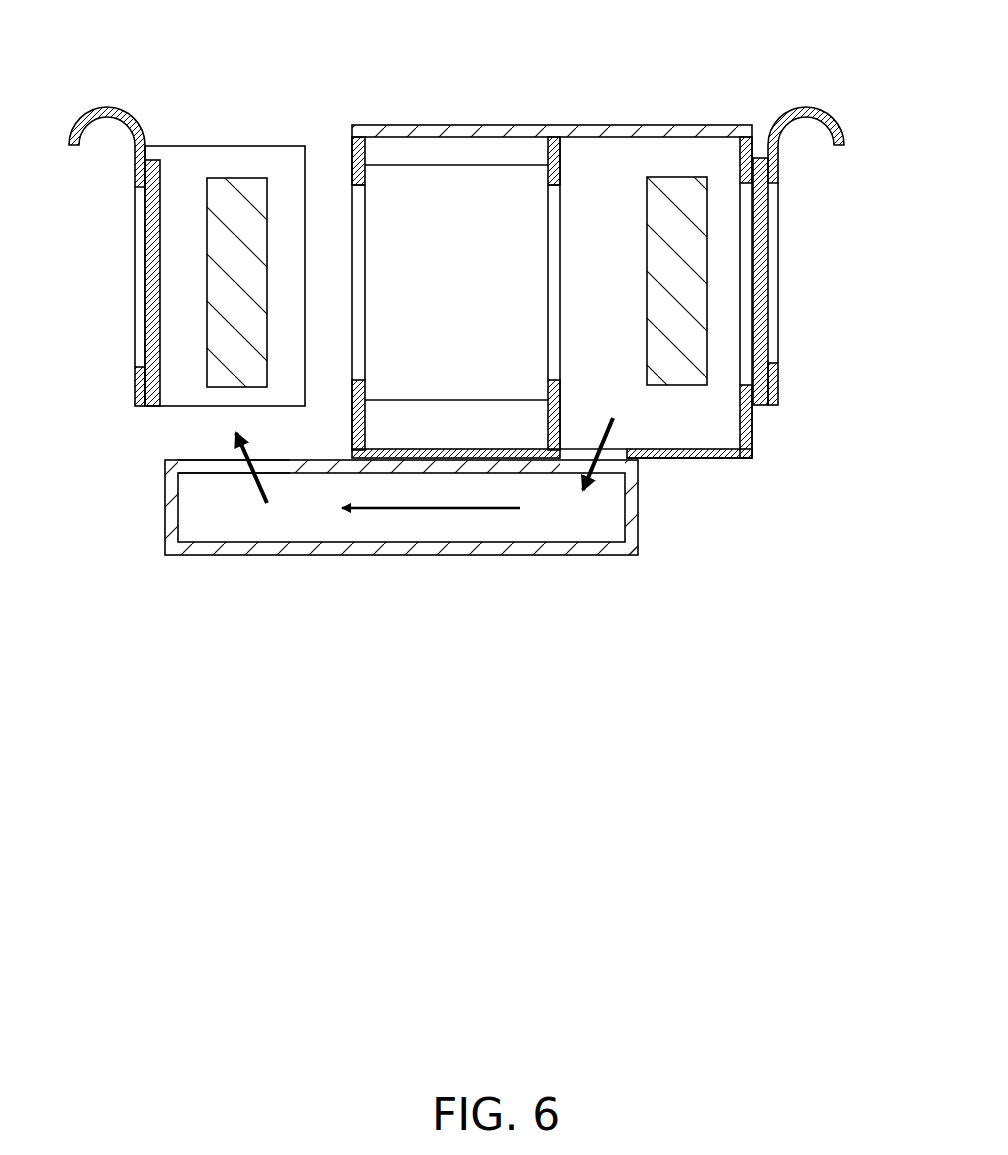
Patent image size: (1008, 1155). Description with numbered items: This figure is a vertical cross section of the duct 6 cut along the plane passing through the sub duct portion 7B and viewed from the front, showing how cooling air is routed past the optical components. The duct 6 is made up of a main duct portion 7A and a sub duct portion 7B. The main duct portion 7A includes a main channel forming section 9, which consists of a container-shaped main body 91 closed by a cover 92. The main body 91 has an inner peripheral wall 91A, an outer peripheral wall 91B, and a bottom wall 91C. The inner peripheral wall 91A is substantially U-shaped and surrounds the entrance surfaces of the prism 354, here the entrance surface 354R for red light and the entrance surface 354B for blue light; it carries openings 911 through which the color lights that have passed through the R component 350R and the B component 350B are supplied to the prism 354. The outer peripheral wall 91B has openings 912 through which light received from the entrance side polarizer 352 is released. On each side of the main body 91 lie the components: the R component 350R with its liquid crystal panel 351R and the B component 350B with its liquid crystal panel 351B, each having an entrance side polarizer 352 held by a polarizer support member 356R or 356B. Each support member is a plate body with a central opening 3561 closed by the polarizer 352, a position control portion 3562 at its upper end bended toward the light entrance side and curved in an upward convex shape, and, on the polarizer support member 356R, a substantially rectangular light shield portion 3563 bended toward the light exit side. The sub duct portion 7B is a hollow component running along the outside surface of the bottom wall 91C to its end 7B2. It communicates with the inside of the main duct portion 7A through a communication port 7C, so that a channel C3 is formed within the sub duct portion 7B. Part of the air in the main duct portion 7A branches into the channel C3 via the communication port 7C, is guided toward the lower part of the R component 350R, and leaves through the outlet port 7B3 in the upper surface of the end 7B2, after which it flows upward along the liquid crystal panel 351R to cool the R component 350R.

The duct 6 is at (580, 645).
The main duct portion 7A is at (688, 462).
The sub duct portion 7B is at (622, 545).
The other end of sub duct portion 7B2 is at (165, 518).
The outlet port 7B3 is at (192, 467).
The communication port 7C is at (572, 452).
The main channel forming section 9 is at (665, 42).
The main body 91 is at (752, 147).
The inner peripheral wall 91A is at (352, 237).
The outer peripheral wall 91B is at (754, 447).
The bottom wall 91C is at (705, 460).
The cover 92 is at (655, 128).
The opening 911 is at (362, 190).
The opening 912 is at (740, 187).
The prism 354 is at (455, 172).
The entrance surface for R light 354R is at (357, 147).
The entrance surface for B light 354B is at (557, 218).
The R component 350R is at (157, 478).
The B component 350B is at (760, 474).
The liquid crystal panel 351R is at (230, 378).
The liquid crystal panel 351B is at (688, 373).
The entrance side polarizer 352 is at (150, 392).
The polarizer support member 356R is at (137, 167).
The polarizer support member 356B is at (778, 162).
The opening 3561 is at (138, 200).
The position control portion 3562 is at (108, 113).
The light shield portion 3563 is at (197, 157).
The channel C3 is at (250, 444).